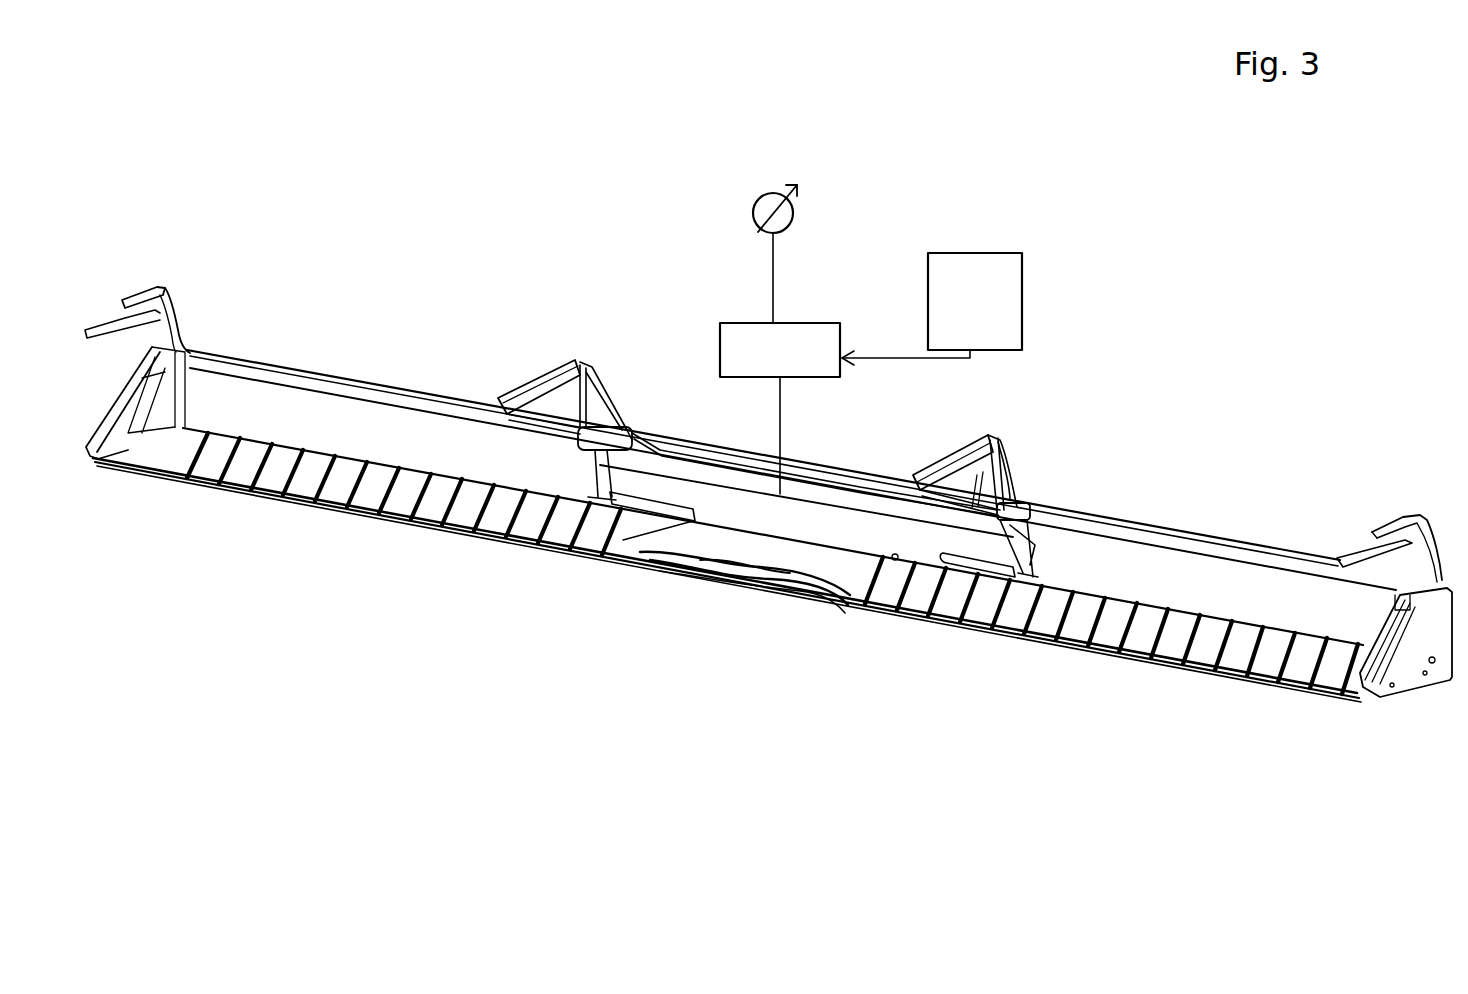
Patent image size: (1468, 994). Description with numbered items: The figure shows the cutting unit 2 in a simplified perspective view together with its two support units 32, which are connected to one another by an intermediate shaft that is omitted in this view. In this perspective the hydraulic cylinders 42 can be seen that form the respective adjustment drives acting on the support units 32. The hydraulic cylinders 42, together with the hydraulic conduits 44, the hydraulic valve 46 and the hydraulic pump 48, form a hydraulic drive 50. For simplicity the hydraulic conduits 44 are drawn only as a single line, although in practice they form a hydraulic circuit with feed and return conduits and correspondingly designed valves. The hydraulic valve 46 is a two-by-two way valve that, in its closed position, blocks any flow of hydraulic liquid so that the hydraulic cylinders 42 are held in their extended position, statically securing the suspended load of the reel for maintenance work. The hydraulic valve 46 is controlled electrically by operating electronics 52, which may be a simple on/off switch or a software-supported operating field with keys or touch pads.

The cutting unit 2 is at (445, 830).
The support unit 32 is at (297, 286).
The hydraulic cylinder 42 is at (598, 490).
The hydraulic conduit 44 is at (852, 505).
The hydraulic valve 46 is at (735, 323).
The hydraulic pump 48 is at (763, 197).
The hydraulic drive 50 is at (608, 145).
The operating electronics 52 is at (932, 309).